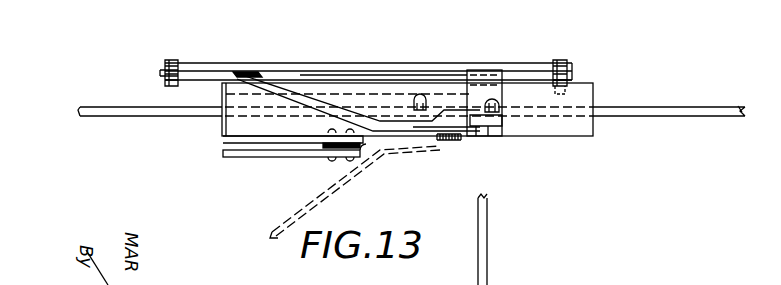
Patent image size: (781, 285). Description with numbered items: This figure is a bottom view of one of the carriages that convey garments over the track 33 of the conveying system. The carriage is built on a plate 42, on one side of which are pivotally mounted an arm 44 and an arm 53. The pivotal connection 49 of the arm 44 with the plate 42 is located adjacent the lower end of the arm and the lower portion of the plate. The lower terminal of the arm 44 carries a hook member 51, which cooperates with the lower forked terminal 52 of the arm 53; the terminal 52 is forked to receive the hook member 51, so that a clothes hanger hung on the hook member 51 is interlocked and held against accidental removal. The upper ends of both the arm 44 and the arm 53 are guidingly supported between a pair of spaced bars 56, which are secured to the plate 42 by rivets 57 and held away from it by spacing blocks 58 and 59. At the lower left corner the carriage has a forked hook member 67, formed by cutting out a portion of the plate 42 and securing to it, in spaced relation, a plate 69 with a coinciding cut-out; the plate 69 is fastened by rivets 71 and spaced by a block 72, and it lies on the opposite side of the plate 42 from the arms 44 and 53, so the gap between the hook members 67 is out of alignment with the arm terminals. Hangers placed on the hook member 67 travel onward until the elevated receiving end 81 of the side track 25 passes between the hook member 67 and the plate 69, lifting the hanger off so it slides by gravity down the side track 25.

The side track 25 is at (272, 233).
The track 33 is at (727, 107).
The plate 42 is at (593, 137).
The arm 44 is at (487, 70).
The pivotal connection 49 is at (498, 106).
The hook member 51 is at (478, 120).
The lower forked terminal 52 is at (458, 128).
The arm 53 is at (268, 78).
The spaced bars 56 is at (381, 77).
The rivets 57 is at (171, 60).
The spacing block 58 is at (165, 78).
The spacing block 59 is at (572, 82).
The hook member 67 is at (228, 140).
The plate 69 is at (243, 157).
The rivets 71 is at (333, 157).
The block 72 is at (362, 150).
The receiving end 81 is at (438, 143).